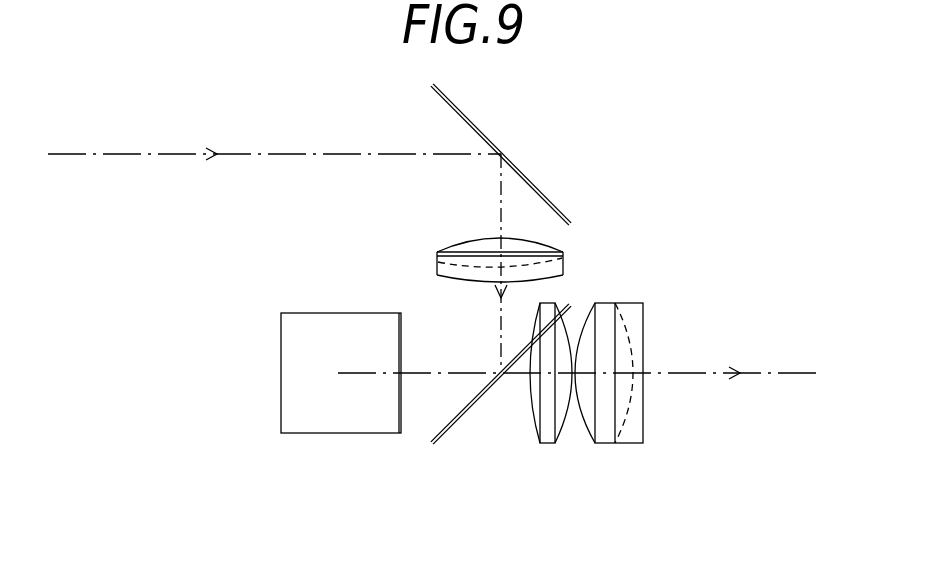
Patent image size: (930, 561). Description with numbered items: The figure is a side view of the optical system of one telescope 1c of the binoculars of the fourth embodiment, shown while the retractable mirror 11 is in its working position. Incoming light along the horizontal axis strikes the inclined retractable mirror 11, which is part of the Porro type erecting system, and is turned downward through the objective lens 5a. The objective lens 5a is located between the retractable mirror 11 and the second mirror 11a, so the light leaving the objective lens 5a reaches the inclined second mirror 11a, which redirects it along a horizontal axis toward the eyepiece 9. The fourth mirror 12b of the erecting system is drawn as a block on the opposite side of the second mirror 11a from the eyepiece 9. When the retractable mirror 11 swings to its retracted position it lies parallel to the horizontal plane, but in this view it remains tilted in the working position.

The telescope 1c is at (837, 83).
The objective lens 5a is at (570, 267).
The eyepiece 9 is at (655, 424).
The retractable mirror 11 is at (462, 112).
The second mirror 11a is at (462, 418).
The fourth mirror 12b is at (342, 433).